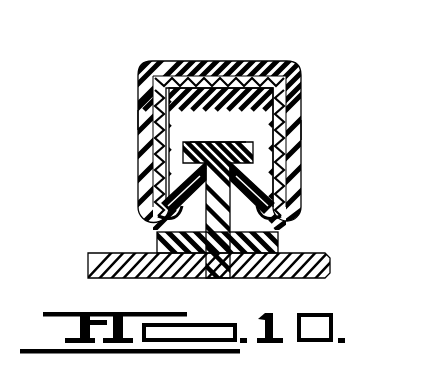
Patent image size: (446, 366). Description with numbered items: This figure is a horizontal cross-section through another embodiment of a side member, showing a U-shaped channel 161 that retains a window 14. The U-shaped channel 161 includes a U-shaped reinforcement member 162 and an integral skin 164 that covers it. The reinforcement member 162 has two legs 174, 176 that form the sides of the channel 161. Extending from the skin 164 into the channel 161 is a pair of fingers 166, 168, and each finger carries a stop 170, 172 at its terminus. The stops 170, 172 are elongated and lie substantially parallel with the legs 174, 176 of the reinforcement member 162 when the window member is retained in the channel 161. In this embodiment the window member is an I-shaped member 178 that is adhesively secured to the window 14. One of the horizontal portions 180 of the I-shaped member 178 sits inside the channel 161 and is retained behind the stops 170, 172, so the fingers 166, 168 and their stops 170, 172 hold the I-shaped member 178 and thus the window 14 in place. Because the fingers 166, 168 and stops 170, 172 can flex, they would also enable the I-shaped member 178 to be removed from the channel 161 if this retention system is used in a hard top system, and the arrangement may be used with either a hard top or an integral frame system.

The window 14 is at (88, 266).
The U-shaped channel 161 is at (165, 100).
The reinforcement member 162 is at (172, 61).
The integral skin 164 is at (140, 121).
The finger 166 is at (168, 221).
The finger 168 is at (298, 213).
The stop 170 is at (200, 172).
The stop 172 is at (268, 160).
The leg 174 is at (165, 198).
The leg 176 is at (295, 130).
The I-shaped member 178 is at (207, 257).
The horizontal portion 180 is at (226, 142).